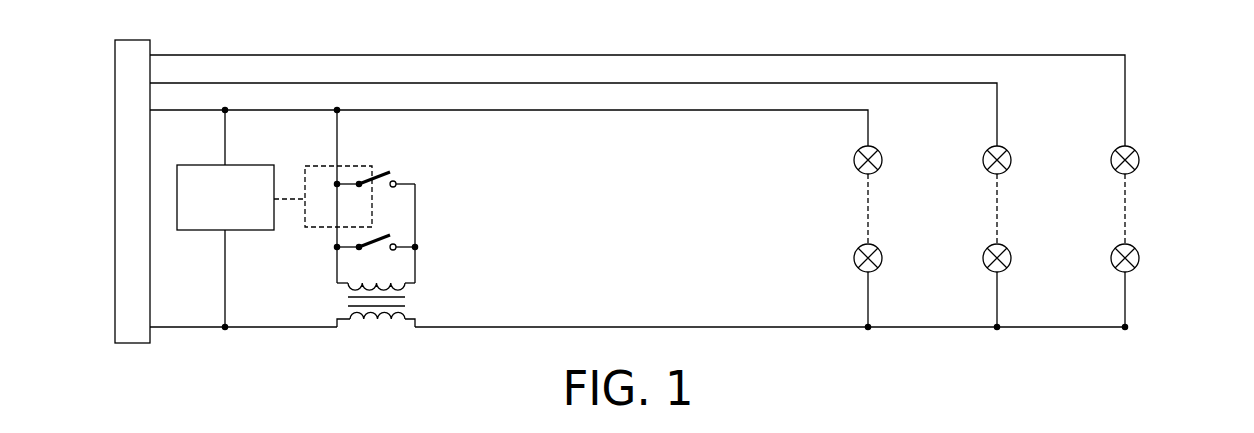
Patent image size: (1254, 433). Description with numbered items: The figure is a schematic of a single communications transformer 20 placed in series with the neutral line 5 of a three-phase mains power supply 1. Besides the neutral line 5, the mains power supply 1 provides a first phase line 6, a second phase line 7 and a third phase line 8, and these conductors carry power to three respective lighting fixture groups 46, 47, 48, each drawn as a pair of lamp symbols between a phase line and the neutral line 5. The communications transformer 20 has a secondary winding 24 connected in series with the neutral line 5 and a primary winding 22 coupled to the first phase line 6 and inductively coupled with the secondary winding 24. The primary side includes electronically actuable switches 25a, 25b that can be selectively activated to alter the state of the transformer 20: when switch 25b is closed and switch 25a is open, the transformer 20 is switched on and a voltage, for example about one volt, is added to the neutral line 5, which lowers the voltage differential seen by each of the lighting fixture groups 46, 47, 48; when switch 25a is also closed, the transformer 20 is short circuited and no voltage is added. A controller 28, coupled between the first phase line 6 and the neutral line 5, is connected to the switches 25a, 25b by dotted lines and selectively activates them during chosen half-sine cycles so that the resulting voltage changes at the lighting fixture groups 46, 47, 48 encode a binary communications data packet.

The three-phase mains power supply 1 is at (114, 190).
The neutral line 5 is at (749, 325).
The first phase line 6 is at (710, 110).
The second phase line 7 is at (749, 83).
The third phase line 8 is at (790, 55).
The communications transformer 20 is at (519, 220).
The primary winding 22 is at (415, 272).
The secondary winding 24 is at (412, 322).
The switch 25a is at (387, 235).
The switch 25b is at (387, 172).
The controller 28 is at (203, 232).
The lighting fixture group 46 is at (891, 168).
The lighting fixture group 47 is at (1020, 168).
The lighting fixture group 48 is at (1148, 168).